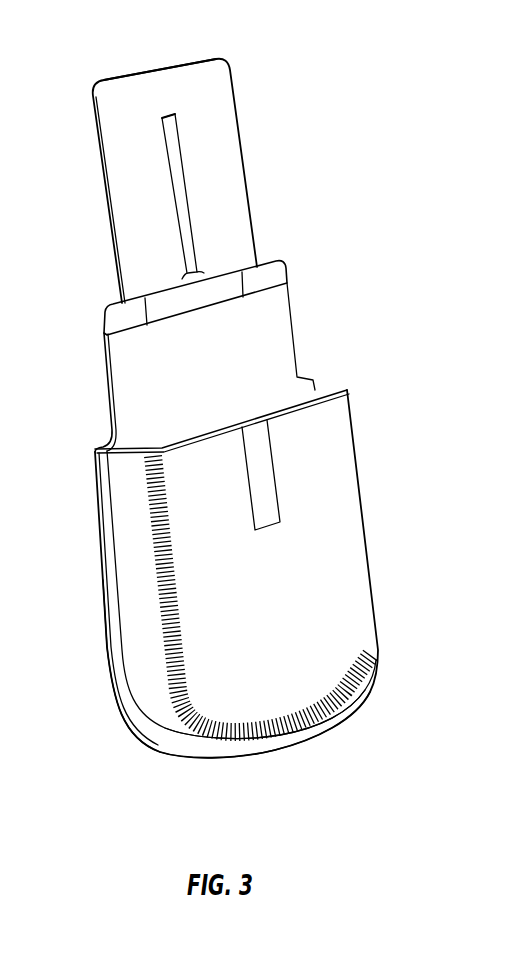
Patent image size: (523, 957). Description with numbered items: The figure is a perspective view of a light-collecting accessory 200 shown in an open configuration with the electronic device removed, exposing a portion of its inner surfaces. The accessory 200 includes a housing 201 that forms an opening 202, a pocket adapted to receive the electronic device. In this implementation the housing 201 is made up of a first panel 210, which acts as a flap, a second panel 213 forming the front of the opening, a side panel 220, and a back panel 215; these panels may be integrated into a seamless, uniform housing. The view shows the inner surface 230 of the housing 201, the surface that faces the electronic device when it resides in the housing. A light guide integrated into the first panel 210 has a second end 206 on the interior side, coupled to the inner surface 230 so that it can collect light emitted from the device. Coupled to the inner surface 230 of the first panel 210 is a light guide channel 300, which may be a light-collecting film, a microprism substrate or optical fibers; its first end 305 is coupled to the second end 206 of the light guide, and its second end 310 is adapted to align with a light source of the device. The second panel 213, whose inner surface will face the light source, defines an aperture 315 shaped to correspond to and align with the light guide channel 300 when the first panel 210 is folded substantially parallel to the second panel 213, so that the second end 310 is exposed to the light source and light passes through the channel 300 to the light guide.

The light-collecting accessory 200 is at (158, 413).
The housing 201 is at (233, 697).
The opening 202 is at (275, 406).
The second end of the light guide 206 is at (168, 298).
The first panel 210 is at (165, 82).
The second panel 213 is at (288, 660).
The back panel 215 is at (117, 637).
The side panel 220 is at (130, 547).
The inner surface 230 is at (227, 170).
The light guide channel 300 is at (173, 153).
The first end of the light guide channel 305 is at (193, 268).
The second end of the light guide channel 310 is at (167, 113).
The aperture 315 is at (262, 468).